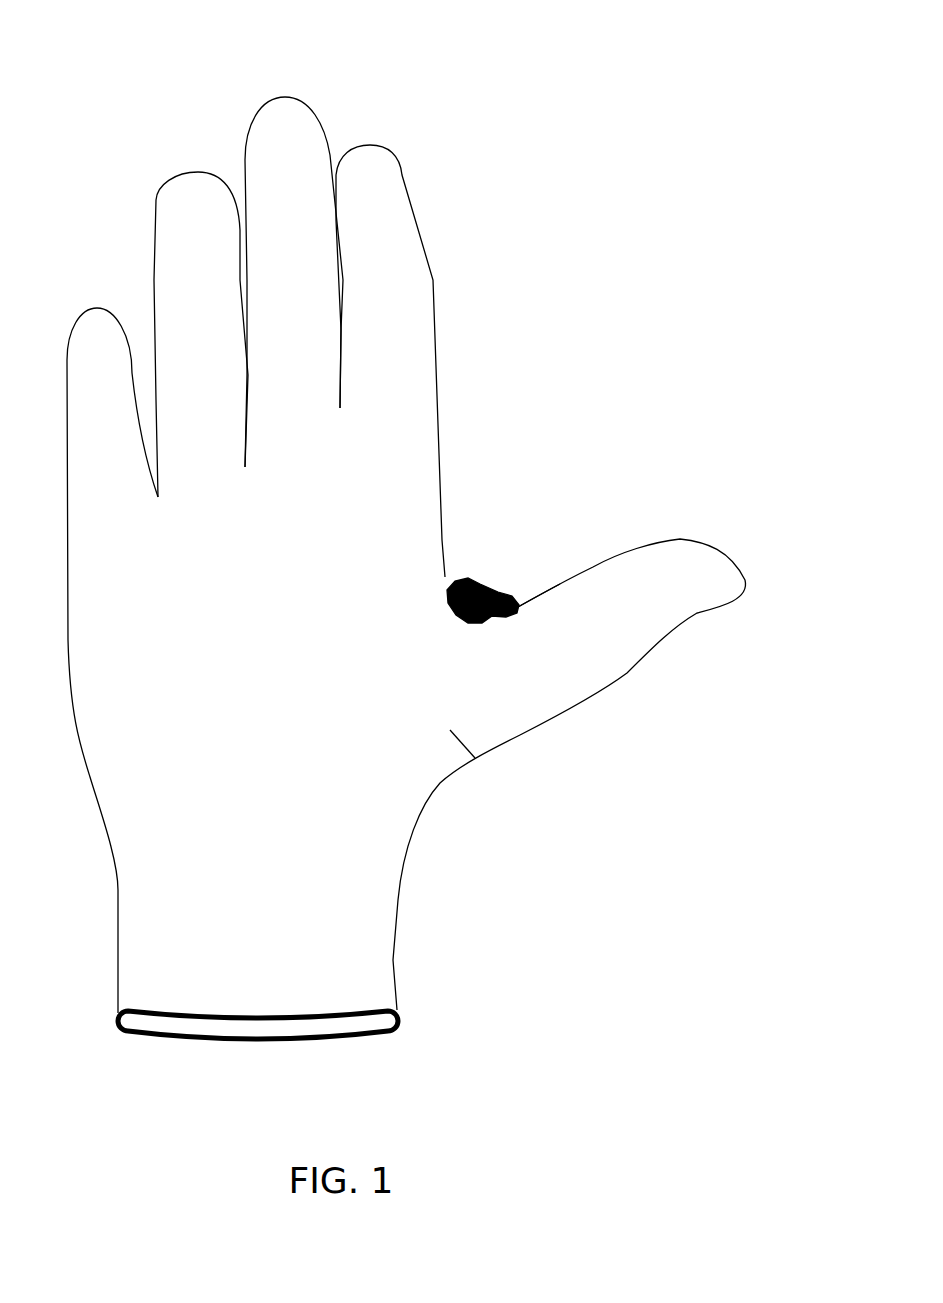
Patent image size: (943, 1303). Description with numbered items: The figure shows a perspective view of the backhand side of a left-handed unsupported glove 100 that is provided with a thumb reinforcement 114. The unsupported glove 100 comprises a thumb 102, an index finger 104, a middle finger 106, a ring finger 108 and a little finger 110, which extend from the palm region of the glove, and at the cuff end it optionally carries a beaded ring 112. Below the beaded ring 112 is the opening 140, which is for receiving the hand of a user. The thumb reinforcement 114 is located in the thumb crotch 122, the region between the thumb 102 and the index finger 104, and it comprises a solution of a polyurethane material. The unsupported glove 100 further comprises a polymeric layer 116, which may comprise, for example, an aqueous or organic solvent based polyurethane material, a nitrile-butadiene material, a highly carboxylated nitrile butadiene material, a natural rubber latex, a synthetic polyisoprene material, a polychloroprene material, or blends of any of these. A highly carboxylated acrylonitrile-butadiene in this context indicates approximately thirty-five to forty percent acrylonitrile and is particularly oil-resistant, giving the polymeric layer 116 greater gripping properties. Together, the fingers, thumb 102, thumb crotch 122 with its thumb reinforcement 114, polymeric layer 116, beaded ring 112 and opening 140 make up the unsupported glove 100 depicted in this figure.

The unsupported glove 100 is at (499, 61).
The thumb 102 is at (732, 548).
The index finger 104 is at (367, 145).
The middle finger 106 is at (285, 97).
The ring finger 108 is at (195, 170).
The little finger 110 is at (92, 307).
The beaded ring 112 is at (400, 1018).
The thumb reinforcement 114 is at (475, 580).
The polymeric layer 116 is at (475, 758).
The thumb crotch 122 is at (542, 597).
The opening 140 is at (205, 1067).